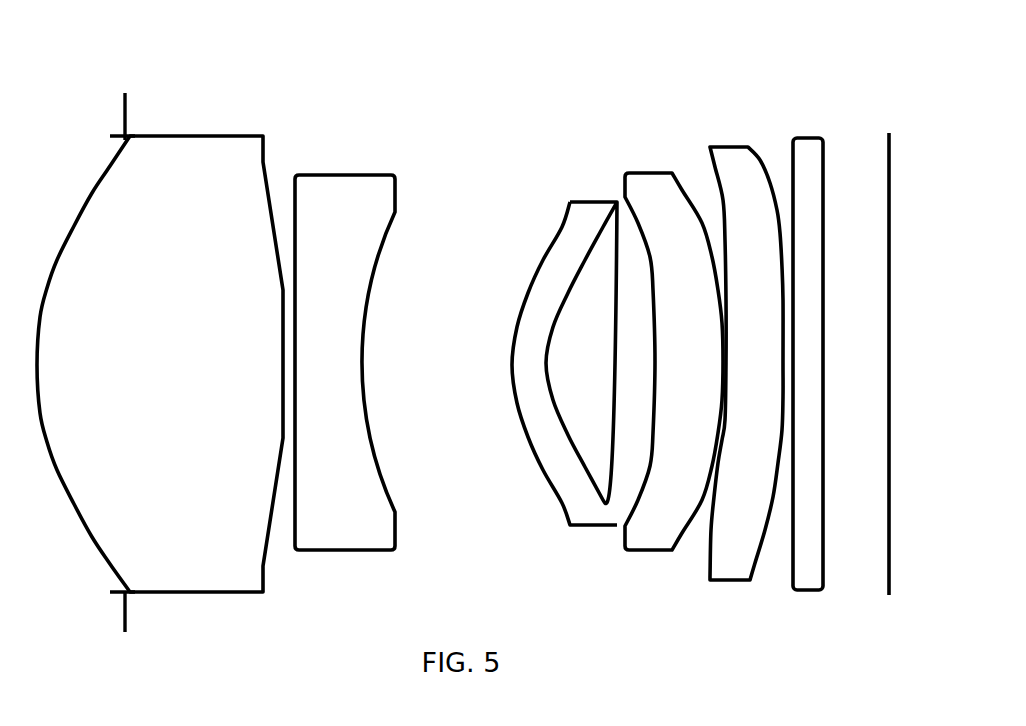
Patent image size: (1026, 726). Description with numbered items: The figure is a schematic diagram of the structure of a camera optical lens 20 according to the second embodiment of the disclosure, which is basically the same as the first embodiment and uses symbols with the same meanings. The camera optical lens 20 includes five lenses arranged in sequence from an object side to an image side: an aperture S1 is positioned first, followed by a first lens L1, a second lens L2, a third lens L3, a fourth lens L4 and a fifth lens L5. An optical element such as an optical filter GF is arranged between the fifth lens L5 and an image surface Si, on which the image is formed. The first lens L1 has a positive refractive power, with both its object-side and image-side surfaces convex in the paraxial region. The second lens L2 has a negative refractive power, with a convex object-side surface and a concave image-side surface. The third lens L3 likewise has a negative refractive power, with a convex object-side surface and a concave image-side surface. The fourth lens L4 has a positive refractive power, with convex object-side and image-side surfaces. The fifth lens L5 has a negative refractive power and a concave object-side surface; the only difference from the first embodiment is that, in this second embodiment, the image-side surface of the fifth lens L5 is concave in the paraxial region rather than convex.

The camera optical lens 20 is at (437, 60).
The aperture S1 is at (122, 350).
The first lens L1 is at (160, 348).
The second lens L2 is at (345, 348).
The third lens L3 is at (564, 348).
The fourth lens L4 is at (674, 348).
The fifth lens L5 is at (746, 348).
The optical filter GF is at (809, 349).
The image surface Si is at (890, 351).